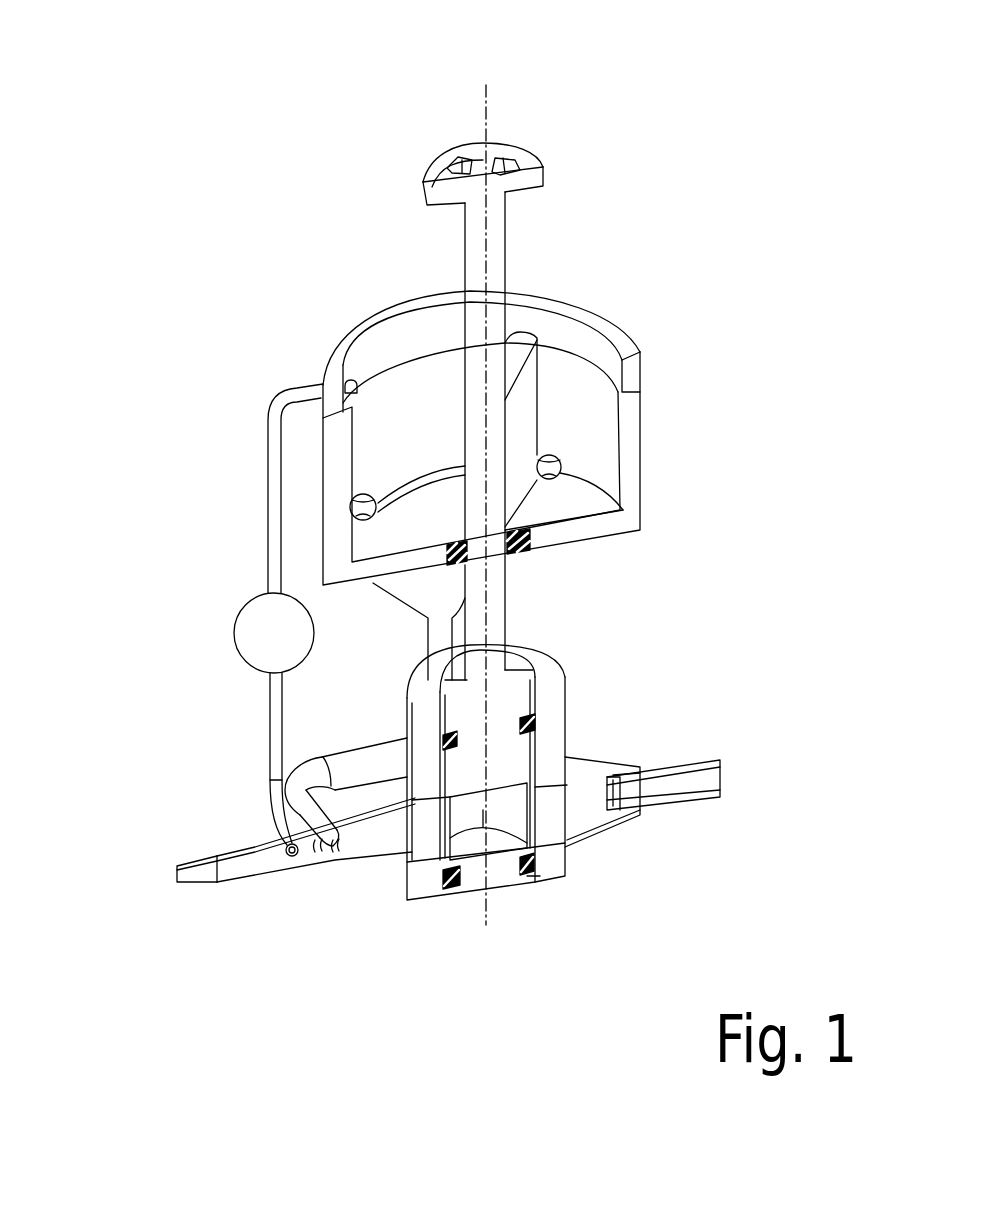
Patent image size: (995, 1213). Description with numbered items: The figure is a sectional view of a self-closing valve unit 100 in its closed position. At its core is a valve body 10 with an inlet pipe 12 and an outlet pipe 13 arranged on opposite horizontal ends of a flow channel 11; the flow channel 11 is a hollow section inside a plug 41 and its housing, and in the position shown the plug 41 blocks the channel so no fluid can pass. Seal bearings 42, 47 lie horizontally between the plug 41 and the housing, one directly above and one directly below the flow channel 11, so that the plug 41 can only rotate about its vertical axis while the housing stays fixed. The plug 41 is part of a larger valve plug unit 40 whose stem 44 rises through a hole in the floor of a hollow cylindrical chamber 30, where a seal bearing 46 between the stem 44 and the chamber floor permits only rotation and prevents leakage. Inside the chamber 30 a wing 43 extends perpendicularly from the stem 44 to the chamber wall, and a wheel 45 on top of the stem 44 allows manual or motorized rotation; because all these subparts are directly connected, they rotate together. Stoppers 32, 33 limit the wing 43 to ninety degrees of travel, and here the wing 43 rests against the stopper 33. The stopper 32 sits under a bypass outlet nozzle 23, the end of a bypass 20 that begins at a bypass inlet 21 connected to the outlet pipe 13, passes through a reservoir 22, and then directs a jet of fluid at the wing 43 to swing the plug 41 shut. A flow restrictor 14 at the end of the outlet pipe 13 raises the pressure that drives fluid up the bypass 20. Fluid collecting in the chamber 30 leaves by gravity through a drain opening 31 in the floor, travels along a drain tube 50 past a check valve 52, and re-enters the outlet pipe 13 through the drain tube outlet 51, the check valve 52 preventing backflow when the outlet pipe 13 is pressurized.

The self-closing valve unit 100 is at (147, 88).
The valve body 10 is at (567, 688).
The flow channel 11 is at (550, 812).
The inlet pipe 12 is at (707, 783).
The outlet pipe 13 is at (238, 884).
The flow restrictor 14 is at (176, 884).
The bypass 20 is at (263, 473).
The bypass inlet 21 is at (293, 858).
The reservoir 22 is at (250, 642).
The bypass outlet nozzle 23 is at (351, 380).
The chamber 30 is at (623, 395).
The drain opening 31 is at (406, 492).
The stopper 32 is at (350, 507).
The stopper 33 is at (562, 470).
The valve plug unit 40 is at (513, 142).
The plug 41 is at (510, 885).
The seal bearing 42 is at (538, 727).
The wing 43 is at (517, 453).
The stem 44 is at (500, 245).
The wheel 45 is at (538, 142).
The seal bearing 46 is at (532, 537).
The seal bearing 47 is at (533, 876).
The drain tube 50 is at (357, 760).
The drain tube outlet 51 is at (330, 855).
The check valve 52 is at (308, 819).